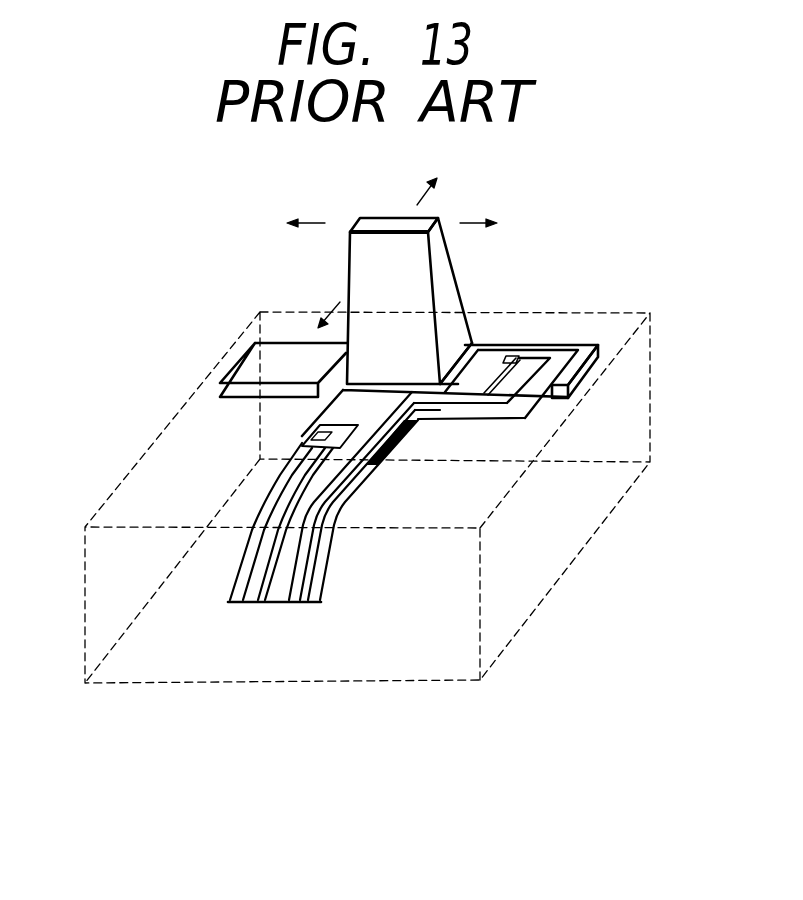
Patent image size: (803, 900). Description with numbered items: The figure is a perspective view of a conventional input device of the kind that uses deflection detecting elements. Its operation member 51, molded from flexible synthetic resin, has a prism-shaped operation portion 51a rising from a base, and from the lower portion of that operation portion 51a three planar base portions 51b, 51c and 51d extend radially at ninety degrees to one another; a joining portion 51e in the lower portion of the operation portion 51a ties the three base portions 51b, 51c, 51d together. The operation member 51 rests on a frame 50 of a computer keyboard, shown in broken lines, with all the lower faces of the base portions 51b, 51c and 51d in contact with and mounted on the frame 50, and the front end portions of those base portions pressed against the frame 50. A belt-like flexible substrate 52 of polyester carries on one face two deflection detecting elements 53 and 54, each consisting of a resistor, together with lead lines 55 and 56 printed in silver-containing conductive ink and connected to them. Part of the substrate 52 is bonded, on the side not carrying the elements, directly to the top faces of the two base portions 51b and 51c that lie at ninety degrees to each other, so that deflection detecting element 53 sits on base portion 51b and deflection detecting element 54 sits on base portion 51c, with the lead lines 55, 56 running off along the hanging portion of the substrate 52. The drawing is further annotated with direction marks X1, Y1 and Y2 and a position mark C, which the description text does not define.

The frame 50 is at (198, 684).
The operation member 51 is at (340, 264).
The operation portion 51a is at (360, 247).
The base portion 51b is at (427, 424).
The base portion 51c is at (585, 390).
The base portion 51d is at (222, 390).
The joining portion 51e is at (317, 392).
The flexible substrate 52 is at (567, 347).
The deflection detecting element 53 is at (303, 440).
The deflection detecting element 54 is at (530, 352).
The lead line 55 is at (262, 590).
The lead line 56 is at (497, 377).
The center position C is at (583, 375).
The X1 direction X1 is at (381, 240).
The Y1 direction Y1 is at (306, 209).
The Y2 direction Y2 is at (479, 210).